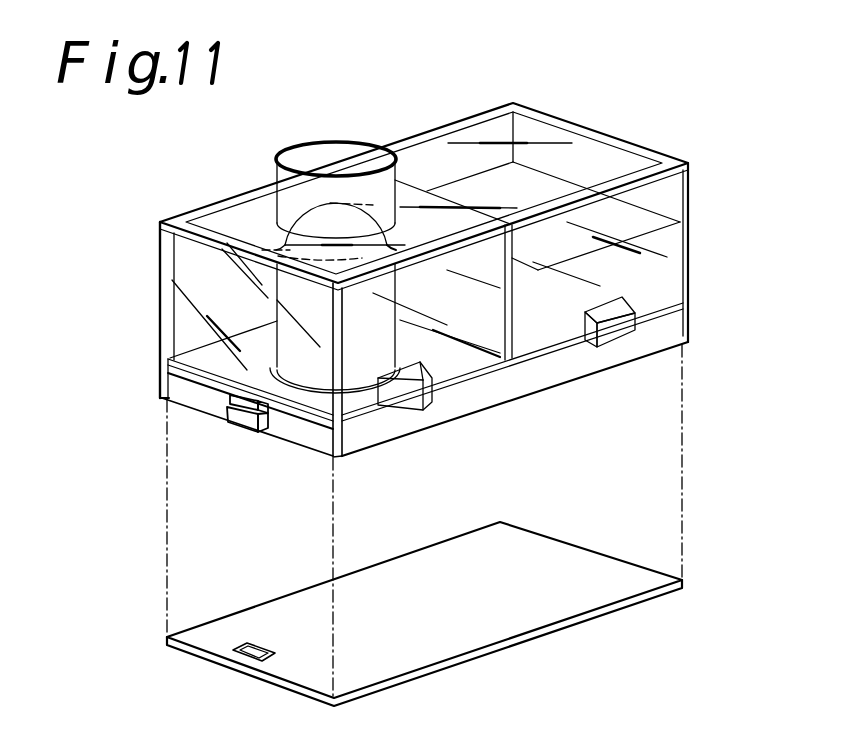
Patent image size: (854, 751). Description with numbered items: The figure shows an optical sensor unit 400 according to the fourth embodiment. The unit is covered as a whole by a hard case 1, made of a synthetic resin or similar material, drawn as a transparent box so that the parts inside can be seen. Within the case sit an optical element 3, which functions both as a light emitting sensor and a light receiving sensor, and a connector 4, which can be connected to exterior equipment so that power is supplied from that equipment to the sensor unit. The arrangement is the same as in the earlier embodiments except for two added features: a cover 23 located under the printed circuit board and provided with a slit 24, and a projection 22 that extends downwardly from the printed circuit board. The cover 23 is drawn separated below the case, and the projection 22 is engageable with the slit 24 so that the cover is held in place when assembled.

The hard case 1 is at (432, 129).
The optical sensor unit 400 is at (452, 365).
The connector 4 is at (672, 205).
The optical element 3 is at (390, 333).
The projection 22 is at (243, 432).
The cover 23 is at (424, 623).
The slit 24 is at (247, 657).